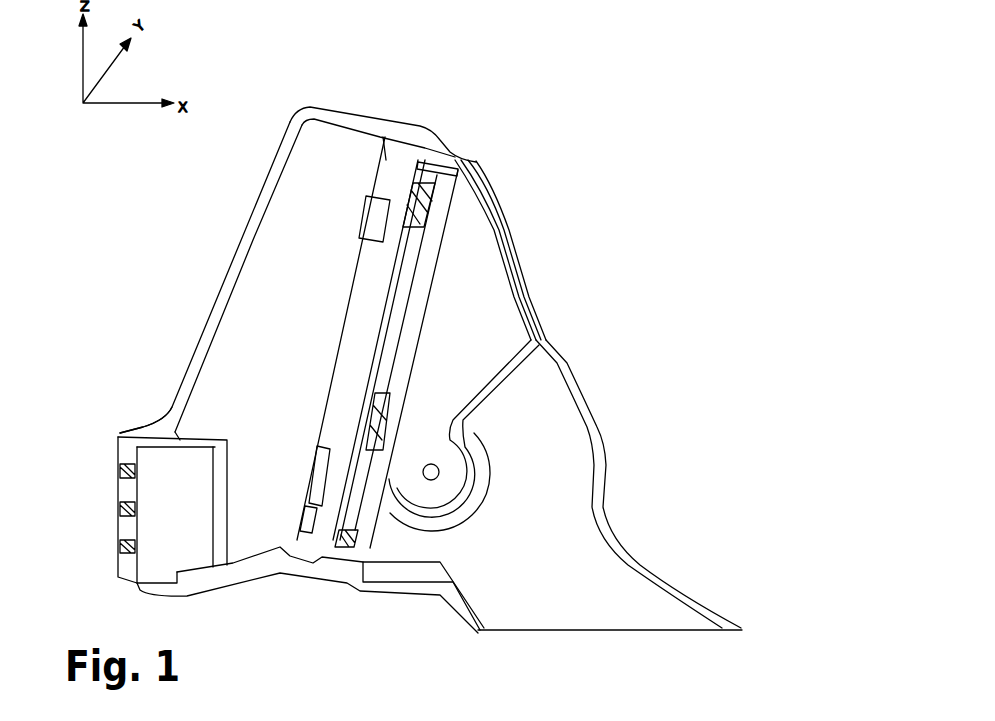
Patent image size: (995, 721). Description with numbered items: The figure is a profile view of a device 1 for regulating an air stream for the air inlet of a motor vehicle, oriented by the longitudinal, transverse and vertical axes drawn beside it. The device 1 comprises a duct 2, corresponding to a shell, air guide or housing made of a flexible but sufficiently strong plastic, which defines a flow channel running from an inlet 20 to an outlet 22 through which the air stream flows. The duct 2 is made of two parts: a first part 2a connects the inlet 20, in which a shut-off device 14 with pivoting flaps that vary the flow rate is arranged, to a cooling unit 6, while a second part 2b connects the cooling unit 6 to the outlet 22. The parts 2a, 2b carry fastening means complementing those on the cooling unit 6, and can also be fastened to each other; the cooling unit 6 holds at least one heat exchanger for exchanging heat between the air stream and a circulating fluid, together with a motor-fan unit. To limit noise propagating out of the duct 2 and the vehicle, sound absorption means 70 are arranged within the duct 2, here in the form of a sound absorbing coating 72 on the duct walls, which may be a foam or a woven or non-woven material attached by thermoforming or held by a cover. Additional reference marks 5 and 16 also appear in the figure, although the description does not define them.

The device for regulating an air stream 1 is at (548, 186).
The duct 2 is at (548, 305).
The first part 2a is at (331, 160).
The second part 2b is at (477, 365).
The fastening element 5 is at (403, 191).
The cooling unit 6 is at (382, 258).
The shut-off device 14 is at (130, 416).
The seat frame 16 is at (123, 453).
The inlet 20 is at (120, 488).
The outlet 22 is at (606, 457).
The sound absorption means 70 is at (458, 157).
The sound absorbing coating 72 is at (265, 568).